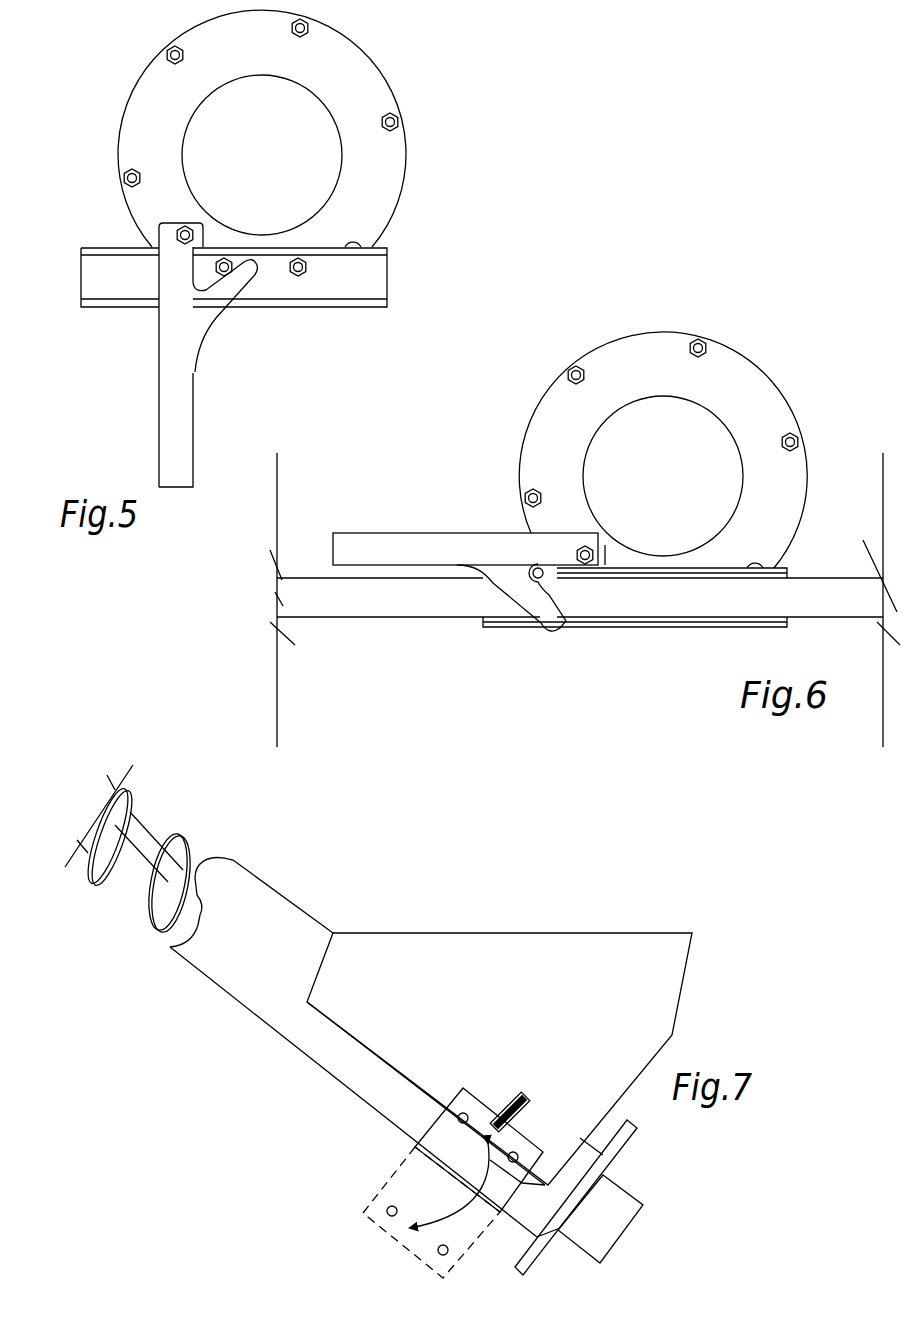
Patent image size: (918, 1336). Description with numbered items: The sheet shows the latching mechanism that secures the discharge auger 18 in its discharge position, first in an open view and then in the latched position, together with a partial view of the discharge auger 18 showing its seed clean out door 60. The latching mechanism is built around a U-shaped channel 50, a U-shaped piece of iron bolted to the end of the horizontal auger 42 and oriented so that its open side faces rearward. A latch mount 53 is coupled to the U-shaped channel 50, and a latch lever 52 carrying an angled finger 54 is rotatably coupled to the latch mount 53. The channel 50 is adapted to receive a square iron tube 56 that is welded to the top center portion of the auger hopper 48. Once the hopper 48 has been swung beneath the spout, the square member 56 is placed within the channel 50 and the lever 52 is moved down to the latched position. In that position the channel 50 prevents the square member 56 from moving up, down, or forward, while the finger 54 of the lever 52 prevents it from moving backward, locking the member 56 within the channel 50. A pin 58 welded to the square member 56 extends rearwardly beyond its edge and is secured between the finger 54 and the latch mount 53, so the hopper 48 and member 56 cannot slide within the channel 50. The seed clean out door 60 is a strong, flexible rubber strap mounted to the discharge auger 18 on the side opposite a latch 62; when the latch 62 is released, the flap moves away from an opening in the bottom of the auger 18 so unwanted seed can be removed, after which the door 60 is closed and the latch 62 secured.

In FIG. 7, the discharge auger 18 is at (222, 978).
In FIG. 5, the horizontal auger 42 is at (150, 102).
In FIG. 6, the horizontal auger 42 is at (550, 425).
In FIG. 7, the auger hopper 48 is at (510, 953).
In FIG. 5, the U-shaped channel 50 is at (377, 280).
In FIG. 6, the U-shaped channel 50 is at (637, 625).
In FIG. 5, the latch lever 52 is at (180, 438).
In FIG. 6, the latch lever 52 is at (408, 545).
In FIG. 5, the latch mount 53 is at (200, 232).
In FIG. 6, the latch mount 53 is at (605, 548).
In FIG. 5, the angled finger 54 is at (240, 280).
In FIG. 6, the angled finger 54 is at (548, 620).
In FIG. 6, the square iron tube 56 is at (800, 592).
In FIG. 6, the pin 58 is at (545, 583).
In FIG. 7, the seed clean out door 60 is at (448, 1157).
In FIG. 7, the latch 62 is at (512, 1105).